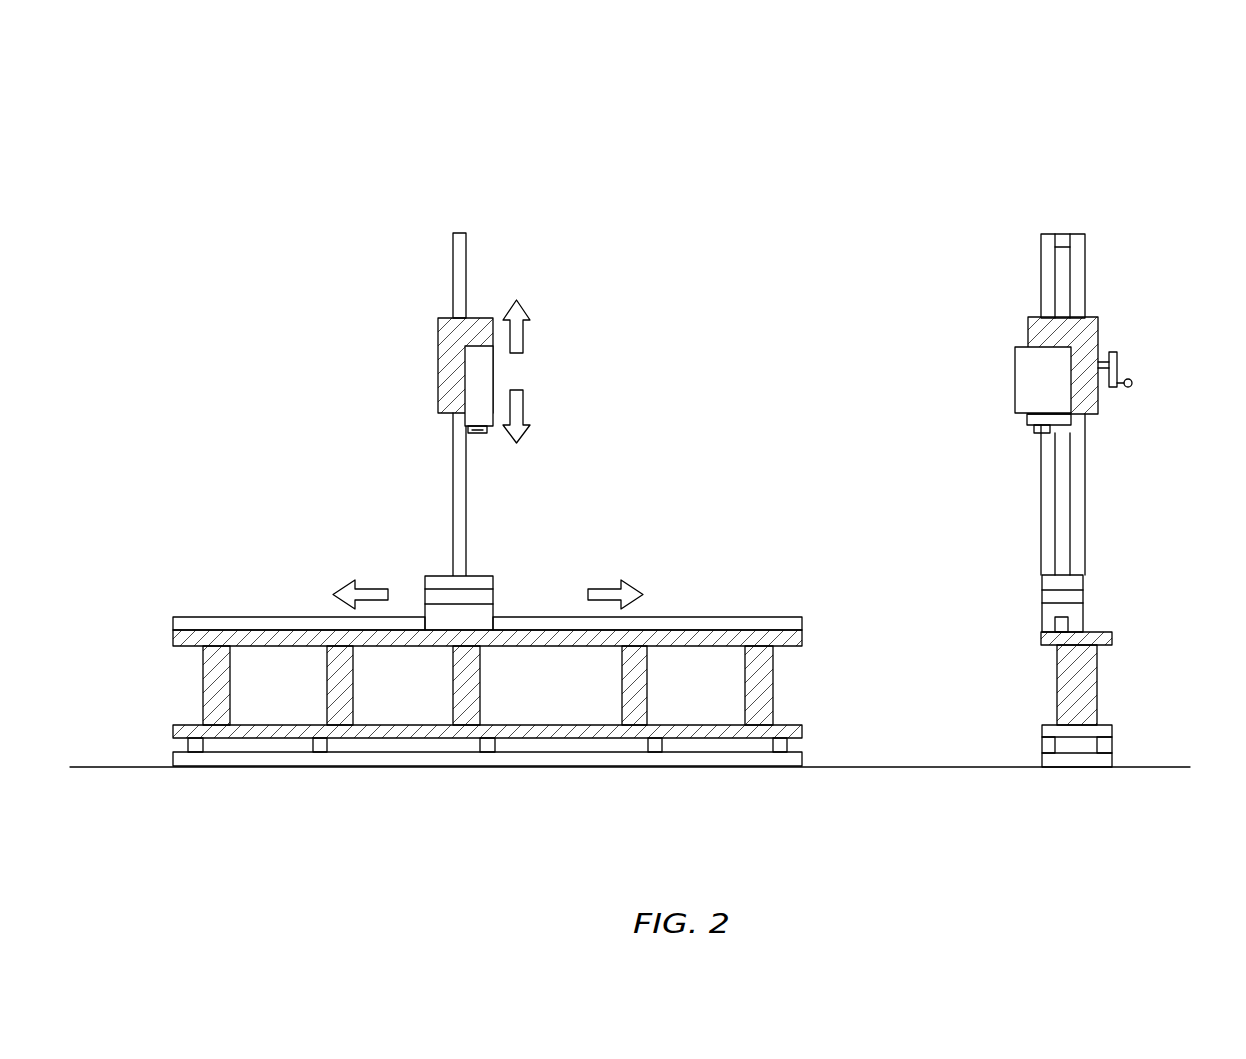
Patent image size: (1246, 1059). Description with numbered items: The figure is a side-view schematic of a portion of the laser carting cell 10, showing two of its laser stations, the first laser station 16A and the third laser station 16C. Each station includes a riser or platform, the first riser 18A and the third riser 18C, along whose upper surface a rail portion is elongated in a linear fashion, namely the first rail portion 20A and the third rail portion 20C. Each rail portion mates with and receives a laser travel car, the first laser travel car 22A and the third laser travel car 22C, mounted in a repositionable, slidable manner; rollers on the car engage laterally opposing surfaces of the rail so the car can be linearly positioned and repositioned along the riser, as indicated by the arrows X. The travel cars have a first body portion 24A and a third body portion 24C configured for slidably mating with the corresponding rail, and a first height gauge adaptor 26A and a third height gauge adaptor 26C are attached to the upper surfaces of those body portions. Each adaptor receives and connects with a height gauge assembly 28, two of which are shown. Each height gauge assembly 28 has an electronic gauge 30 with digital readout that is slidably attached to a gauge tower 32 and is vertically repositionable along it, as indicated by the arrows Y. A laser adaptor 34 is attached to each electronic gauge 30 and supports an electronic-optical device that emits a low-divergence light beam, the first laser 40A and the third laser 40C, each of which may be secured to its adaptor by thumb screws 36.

The laser carting cell 10 is at (706, 268).
The first laser station 16A is at (293, 347).
The third laser station 16C is at (906, 305).
The first riser 18A is at (145, 644).
The third riser 18C is at (992, 643).
The first rail portion 20A is at (235, 627).
The third rail portion 20C is at (1065, 626).
The first laser travel car 22A is at (497, 612).
The third laser travel car 22C is at (1040, 612).
The first body portion 24A is at (425, 607).
The third body portion 24C is at (1040, 630).
The first height gauge adaptor 26A is at (494, 596).
The third height gauge adaptor 26C is at (1085, 596).
The height gauge assembly 28 is at (528, 366).
The electronic gauge 30 is at (438, 362).
The gauge tower 32 is at (467, 268).
The laser adaptor 34 is at (488, 433).
The thumb screws 36 is at (470, 434).
The first laser 40A is at (460, 395).
The third laser 40C is at (1015, 365).